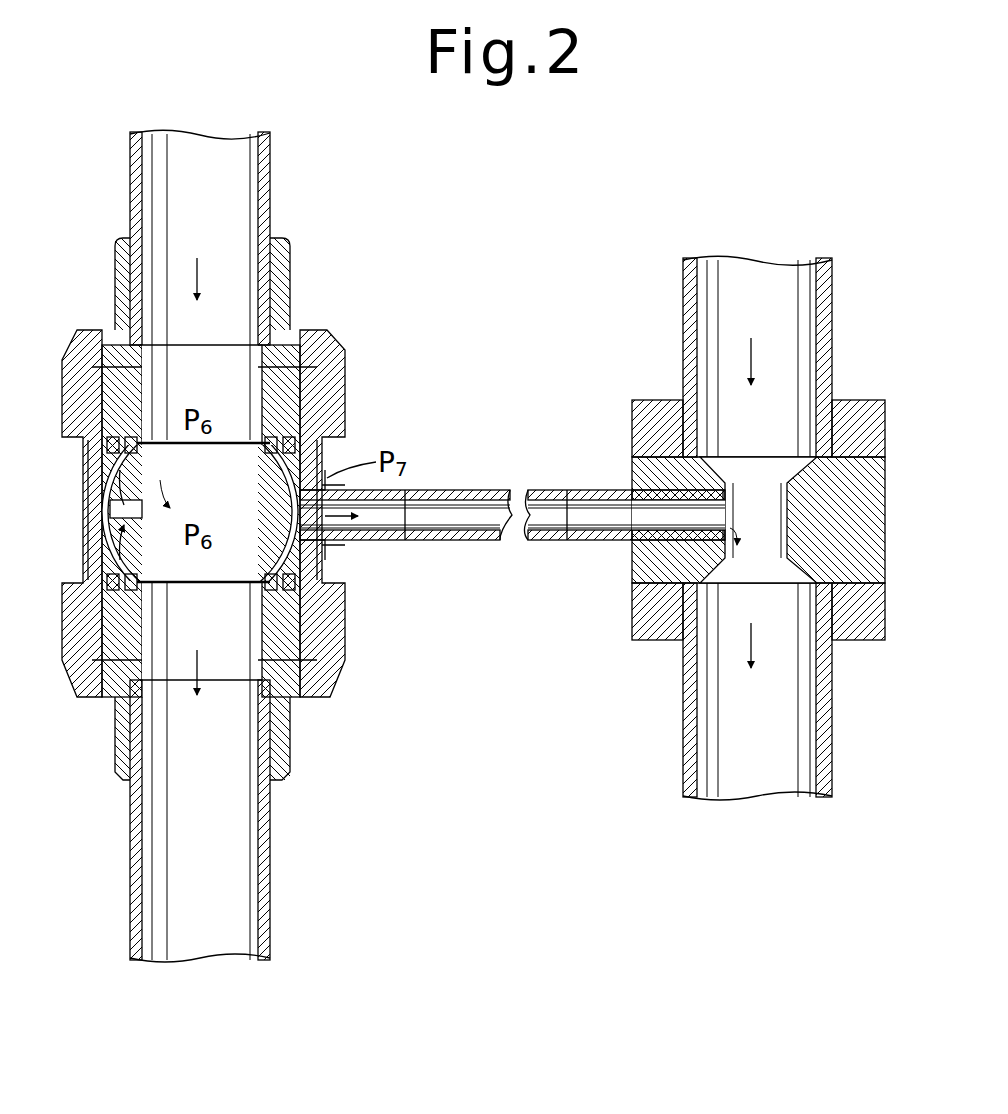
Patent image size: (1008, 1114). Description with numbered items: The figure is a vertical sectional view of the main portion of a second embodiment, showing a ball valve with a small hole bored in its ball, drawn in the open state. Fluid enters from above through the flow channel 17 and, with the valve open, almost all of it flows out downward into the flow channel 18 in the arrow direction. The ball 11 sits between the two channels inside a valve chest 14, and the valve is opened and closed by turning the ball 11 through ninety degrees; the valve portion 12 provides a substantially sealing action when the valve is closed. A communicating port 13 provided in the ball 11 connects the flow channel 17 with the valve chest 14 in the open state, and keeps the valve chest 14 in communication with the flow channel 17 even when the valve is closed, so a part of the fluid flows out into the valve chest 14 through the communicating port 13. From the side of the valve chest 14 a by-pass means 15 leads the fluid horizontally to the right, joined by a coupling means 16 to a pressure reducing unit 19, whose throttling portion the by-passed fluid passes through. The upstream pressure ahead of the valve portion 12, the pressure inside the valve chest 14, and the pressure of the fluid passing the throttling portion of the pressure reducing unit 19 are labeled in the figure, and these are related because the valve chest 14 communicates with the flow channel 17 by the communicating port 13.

The ball 11 is at (325, 547).
The valve portion 12 is at (327, 560).
The communicating port 13 is at (120, 515).
The valve chest 14 is at (328, 460).
The by-pass means 15 is at (393, 538).
The coupling means 16 is at (458, 490).
The flow channel 17 is at (220, 397).
The flow channel 18 is at (235, 757).
The pressure reducing unit 19 is at (632, 472).